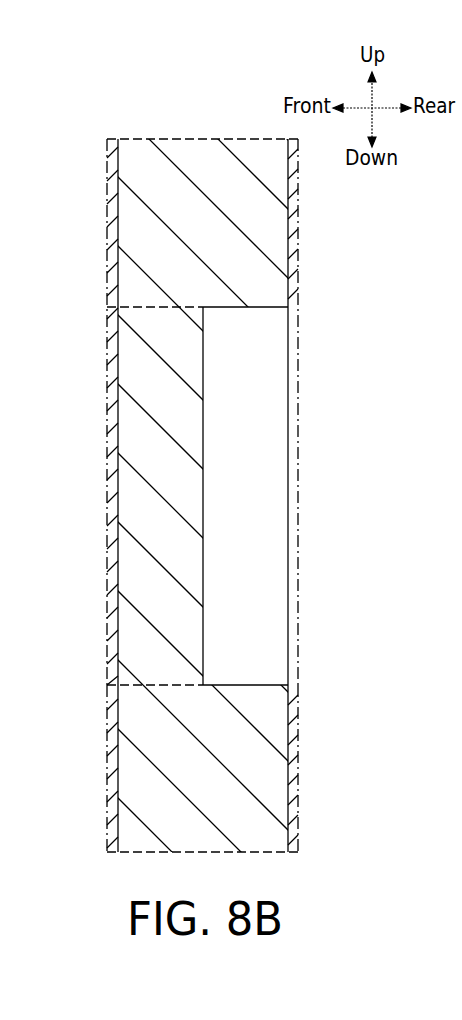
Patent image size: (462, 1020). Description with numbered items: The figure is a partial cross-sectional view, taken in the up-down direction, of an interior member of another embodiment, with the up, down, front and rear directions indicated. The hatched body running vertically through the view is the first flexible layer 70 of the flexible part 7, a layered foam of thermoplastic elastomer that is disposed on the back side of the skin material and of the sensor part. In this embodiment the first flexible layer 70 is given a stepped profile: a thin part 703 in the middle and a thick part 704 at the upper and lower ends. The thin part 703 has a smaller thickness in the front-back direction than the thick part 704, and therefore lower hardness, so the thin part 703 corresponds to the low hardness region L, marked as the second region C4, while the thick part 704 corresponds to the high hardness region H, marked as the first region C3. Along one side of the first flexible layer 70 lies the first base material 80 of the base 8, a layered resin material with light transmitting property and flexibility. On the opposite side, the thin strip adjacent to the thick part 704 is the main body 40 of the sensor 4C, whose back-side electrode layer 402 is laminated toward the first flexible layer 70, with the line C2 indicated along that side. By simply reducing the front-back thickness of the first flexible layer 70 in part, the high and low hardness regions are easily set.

The flexible part 7 is at (170, 160).
The base 8 is at (108, 150).
The main body 40 is at (290, 147).
The first flexible layer 70 is at (235, 835).
The thin part 703 is at (143, 503).
The thick part 704 is at (133, 235).
The first base material 80 is at (112, 814).
The sensor 4C is at (298, 725).
The back-side electrode layer 402 is at (298, 767).
The region C2 is at (298, 223).
The first region C3 is at (148, 190).
The second region C4 is at (135, 390).